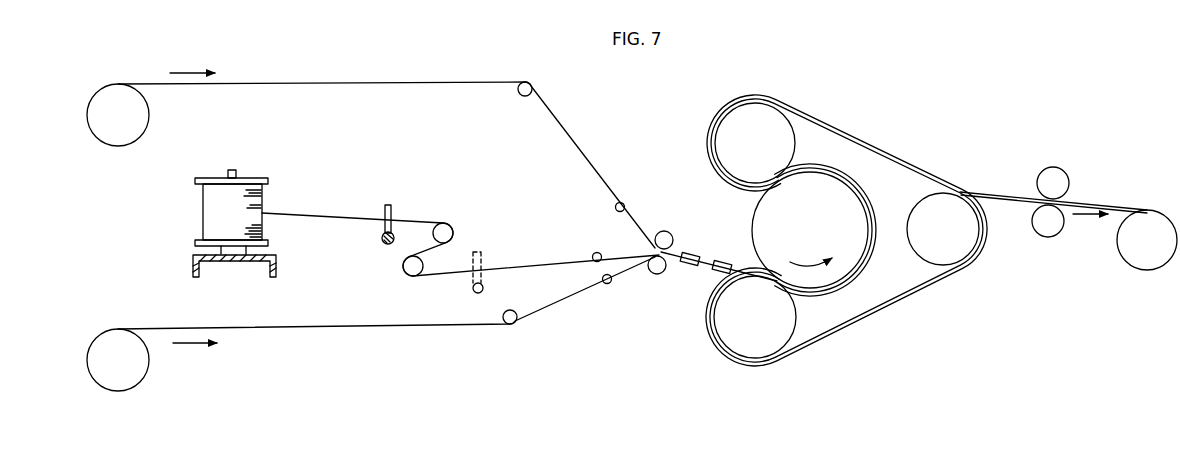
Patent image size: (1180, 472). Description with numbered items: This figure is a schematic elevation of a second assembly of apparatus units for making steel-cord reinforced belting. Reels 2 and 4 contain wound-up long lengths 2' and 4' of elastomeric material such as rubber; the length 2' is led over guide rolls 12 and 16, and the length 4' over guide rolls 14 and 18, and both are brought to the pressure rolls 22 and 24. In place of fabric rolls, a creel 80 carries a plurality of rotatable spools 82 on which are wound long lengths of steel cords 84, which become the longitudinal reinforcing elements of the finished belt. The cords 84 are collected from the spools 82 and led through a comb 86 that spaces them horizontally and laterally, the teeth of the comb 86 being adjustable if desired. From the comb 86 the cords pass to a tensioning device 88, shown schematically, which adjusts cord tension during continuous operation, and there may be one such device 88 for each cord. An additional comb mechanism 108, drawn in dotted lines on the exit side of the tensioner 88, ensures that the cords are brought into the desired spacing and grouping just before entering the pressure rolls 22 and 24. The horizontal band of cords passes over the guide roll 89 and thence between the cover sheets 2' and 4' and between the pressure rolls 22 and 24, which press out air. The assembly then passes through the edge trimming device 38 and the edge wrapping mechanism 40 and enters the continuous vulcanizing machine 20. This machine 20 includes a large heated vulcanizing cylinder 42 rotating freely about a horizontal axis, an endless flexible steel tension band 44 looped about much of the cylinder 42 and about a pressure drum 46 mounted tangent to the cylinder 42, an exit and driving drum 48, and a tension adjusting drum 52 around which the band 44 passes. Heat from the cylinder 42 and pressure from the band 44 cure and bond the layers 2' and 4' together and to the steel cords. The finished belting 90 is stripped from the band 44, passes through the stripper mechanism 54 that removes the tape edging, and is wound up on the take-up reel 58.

The reel 2 is at (99, 115).
The length of elastomeric material 2' is at (386, 152).
The reel 4 is at (99, 360).
The length of elastomeric material 4' is at (386, 304).
The guide roll 12 is at (518, 94).
The guide roll 14 is at (503, 316).
The guide roll 16 is at (623, 203).
The guide roll 18 is at (608, 284).
The continuous curing or vulcanizing machine 20 is at (864, 129).
The pressure roll 22 is at (676, 220).
The pressure roll 24 is at (653, 273).
The edge trimming device 38 is at (693, 254).
The edge wrapping mechanism 40 is at (722, 273).
The vulcanizing cylinder 42 is at (819, 225).
The endless flexible steel tension band 44 is at (888, 298).
The pressure drum 46 is at (766, 335).
The exit and driving drum 48 is at (766, 141).
The tension adjusting drum 52 is at (954, 230).
The stripper mechanism 54 is at (1055, 178).
The take-up reel 58 is at (1158, 246).
The creel 80 is at (193, 266).
The spool 82 is at (203, 220).
The steel cord 84 is at (340, 218).
The comb 86 is at (382, 225).
The tensioning device 88 is at (410, 243).
The guide roll 89 is at (592, 260).
The finished belting 90 is at (979, 188).
The additional comb mechanism 108 is at (485, 259).